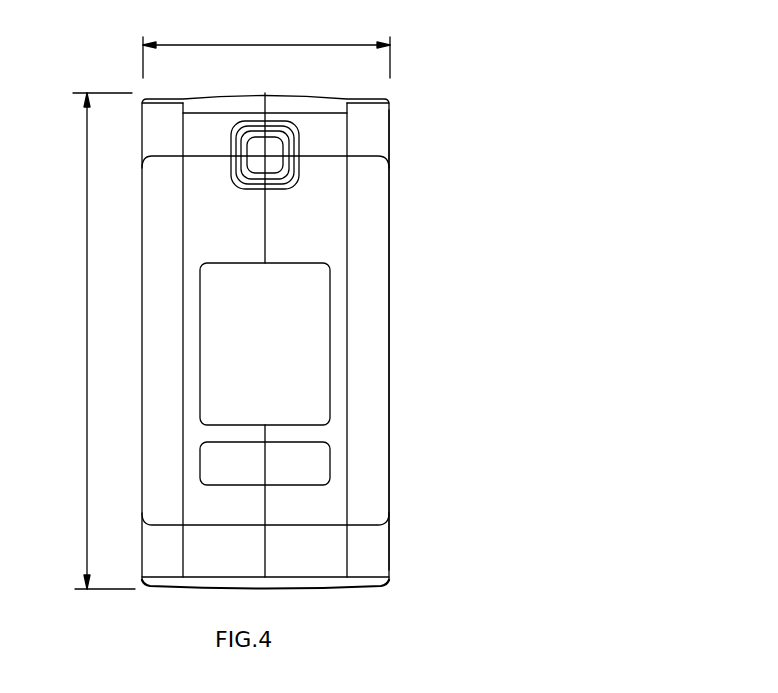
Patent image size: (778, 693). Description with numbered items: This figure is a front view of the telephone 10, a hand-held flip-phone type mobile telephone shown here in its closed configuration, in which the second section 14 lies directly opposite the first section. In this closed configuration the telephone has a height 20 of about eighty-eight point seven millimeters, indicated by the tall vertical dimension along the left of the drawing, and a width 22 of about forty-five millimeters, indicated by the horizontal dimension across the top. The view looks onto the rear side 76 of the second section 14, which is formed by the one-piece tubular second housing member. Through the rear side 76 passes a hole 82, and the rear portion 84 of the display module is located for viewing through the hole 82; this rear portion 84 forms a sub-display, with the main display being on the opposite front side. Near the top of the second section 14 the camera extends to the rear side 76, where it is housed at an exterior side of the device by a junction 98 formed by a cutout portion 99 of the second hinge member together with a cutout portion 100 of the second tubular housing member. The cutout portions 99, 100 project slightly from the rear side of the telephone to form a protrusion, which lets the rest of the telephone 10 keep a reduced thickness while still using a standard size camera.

The telephone 10 is at (279, 323).
The second section 14 is at (377, 343).
The height 20 is at (87, 296).
The width 22 is at (277, 44).
The rear side 76 is at (362, 275).
The hole 82 is at (264, 355).
The rear portion 84 is at (225, 348).
The junction 98 is at (273, 153).
The cutout portion 99 is at (245, 175).
The cutout portion 100 is at (257, 135).